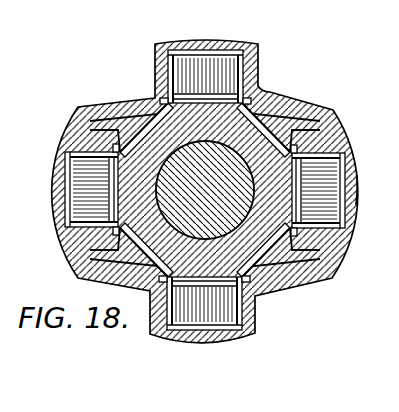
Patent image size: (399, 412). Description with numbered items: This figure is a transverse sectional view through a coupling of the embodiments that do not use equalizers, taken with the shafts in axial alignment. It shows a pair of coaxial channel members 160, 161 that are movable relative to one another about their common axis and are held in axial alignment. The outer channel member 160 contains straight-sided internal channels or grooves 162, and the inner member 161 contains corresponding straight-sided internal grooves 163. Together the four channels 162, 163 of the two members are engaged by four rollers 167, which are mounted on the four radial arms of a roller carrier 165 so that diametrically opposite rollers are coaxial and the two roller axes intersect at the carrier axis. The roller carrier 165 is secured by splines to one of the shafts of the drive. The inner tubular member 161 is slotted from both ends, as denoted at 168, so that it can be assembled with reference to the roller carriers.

The channel member 160 is at (256, 45).
The channel member 161 is at (296, 138).
The channel 162 is at (204, 52).
The channel 163 is at (63, 181).
The roller carrier 165 is at (173, 128).
The roller 167 is at (323, 181).
The slot 168 is at (377, 153).